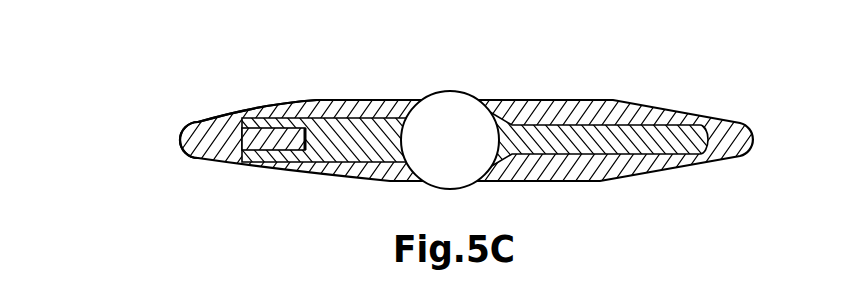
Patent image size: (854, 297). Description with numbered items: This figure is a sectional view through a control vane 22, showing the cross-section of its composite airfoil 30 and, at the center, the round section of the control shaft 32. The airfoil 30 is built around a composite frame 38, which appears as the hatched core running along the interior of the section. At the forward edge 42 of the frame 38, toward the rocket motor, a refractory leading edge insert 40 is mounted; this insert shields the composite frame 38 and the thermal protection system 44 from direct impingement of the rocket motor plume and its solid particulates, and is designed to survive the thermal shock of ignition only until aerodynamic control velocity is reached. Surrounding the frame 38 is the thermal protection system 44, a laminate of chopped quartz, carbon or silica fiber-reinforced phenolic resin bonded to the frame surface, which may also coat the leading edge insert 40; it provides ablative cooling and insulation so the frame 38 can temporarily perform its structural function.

The control vane 22 is at (160, 86).
The airfoil 30 is at (695, 70).
The control shaft 32 is at (456, 147).
The frame 38 is at (347, 138).
The leading edge insert 40 is at (200, 163).
The forward edge 42 is at (208, 72).
The thermal protection system 44 is at (609, 110).